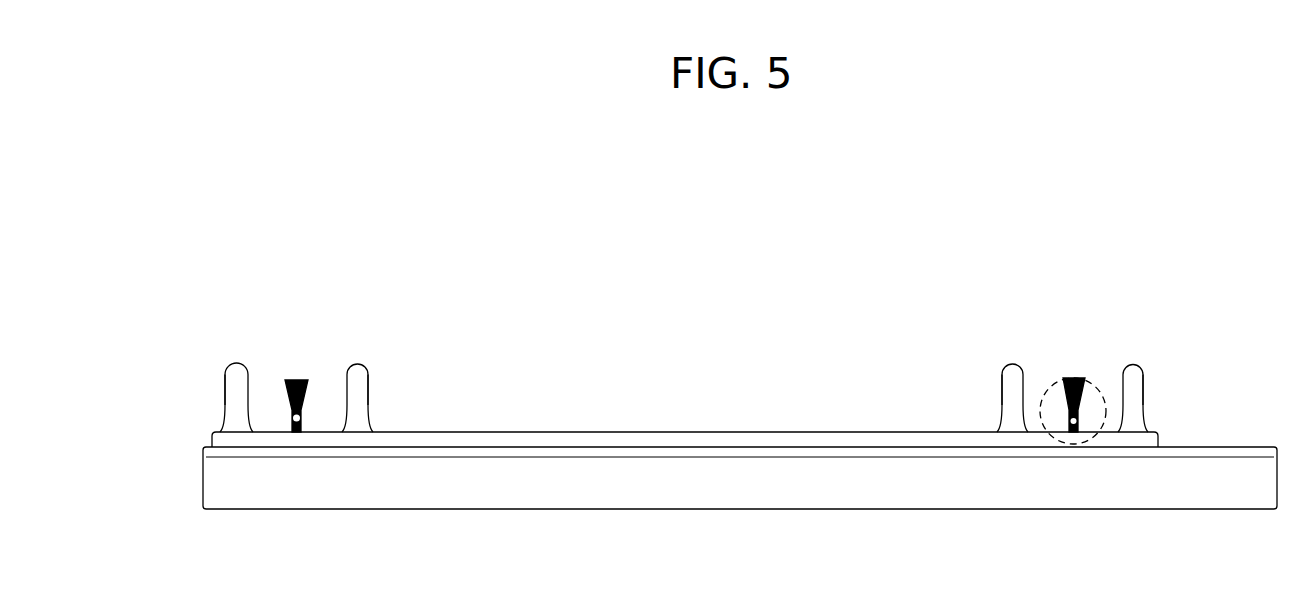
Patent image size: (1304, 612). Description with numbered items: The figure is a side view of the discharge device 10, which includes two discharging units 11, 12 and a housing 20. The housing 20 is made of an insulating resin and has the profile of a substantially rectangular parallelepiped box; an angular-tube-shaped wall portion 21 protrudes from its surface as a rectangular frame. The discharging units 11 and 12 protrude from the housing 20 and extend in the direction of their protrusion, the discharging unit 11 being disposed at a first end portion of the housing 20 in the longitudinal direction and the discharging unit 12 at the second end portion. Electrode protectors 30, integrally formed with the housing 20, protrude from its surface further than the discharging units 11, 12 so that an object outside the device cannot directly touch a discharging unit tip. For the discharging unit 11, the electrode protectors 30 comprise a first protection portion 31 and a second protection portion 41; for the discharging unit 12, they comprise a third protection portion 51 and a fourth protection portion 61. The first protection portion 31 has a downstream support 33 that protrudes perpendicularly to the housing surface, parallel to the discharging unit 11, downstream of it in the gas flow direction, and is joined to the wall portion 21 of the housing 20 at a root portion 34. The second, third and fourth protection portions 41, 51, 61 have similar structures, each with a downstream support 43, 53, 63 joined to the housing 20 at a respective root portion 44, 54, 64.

The discharge device 10 is at (1213, 250).
The discharging unit 11 is at (300, 363).
The discharging unit 12 is at (1079, 363).
The housing 20 is at (581, 492).
The wall portion 21 is at (624, 442).
The electrode protector 30 is at (684, 344).
The first protection portion 31 is at (220, 353).
The downstream support 33 is at (231, 382).
The root portion 34 is at (227, 424).
The second protection portion 41 is at (368, 351).
The downstream support 43 is at (364, 382).
The root portion 44 is at (370, 424).
The third protection portion 51 is at (1142, 353).
The downstream support 53 is at (1141, 382).
The root portion 54 is at (1147, 424).
The fourth protection portion 61 is at (996, 356).
The downstream support 63 is at (1008, 382).
The root portion 64 is at (1004, 424).